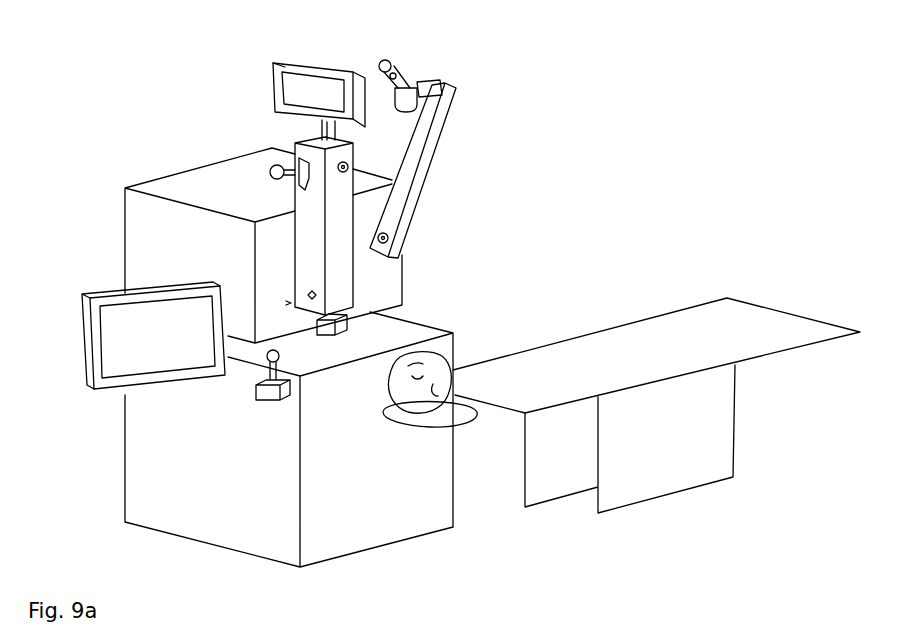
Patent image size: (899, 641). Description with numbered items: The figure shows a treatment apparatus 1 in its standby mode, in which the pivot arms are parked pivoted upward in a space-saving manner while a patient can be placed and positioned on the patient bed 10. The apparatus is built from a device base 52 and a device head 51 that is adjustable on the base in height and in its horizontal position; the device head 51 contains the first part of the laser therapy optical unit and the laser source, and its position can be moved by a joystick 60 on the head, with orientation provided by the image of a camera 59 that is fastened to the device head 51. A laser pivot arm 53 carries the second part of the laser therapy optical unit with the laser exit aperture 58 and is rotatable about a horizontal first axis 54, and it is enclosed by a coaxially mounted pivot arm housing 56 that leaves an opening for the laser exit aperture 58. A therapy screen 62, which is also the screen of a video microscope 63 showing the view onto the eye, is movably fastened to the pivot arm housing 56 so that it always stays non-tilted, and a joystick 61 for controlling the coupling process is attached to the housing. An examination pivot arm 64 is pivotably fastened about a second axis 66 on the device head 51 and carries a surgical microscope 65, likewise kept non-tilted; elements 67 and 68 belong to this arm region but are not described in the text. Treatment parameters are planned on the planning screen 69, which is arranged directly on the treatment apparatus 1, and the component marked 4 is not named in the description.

The treatment apparatus 1 is at (135, 146).
The device body 4 is at (263, 245).
The patient bed 10 is at (700, 306).
The device head 51 is at (234, 168).
The device base 52 is at (135, 456).
The laser pivot arm 53 is at (333, 226).
The first axis 54 is at (291, 303).
The pivot arm housing 56 is at (348, 278).
The laser exit aperture 58 is at (350, 166).
The camera 59 is at (349, 320).
The joystick 60 is at (303, 386).
The joystick 61 is at (273, 164).
The therapy screen 62 is at (329, 62).
The video microscope 63 is at (343, 167).
The examination pivot arm 64 is at (424, 188).
The surgical microscope 65 is at (440, 78).
The second axis 66 is at (389, 238).
The clamp 67 is at (300, 158).
The pivot block 68 is at (458, 91).
The planning screen 69 is at (116, 300).